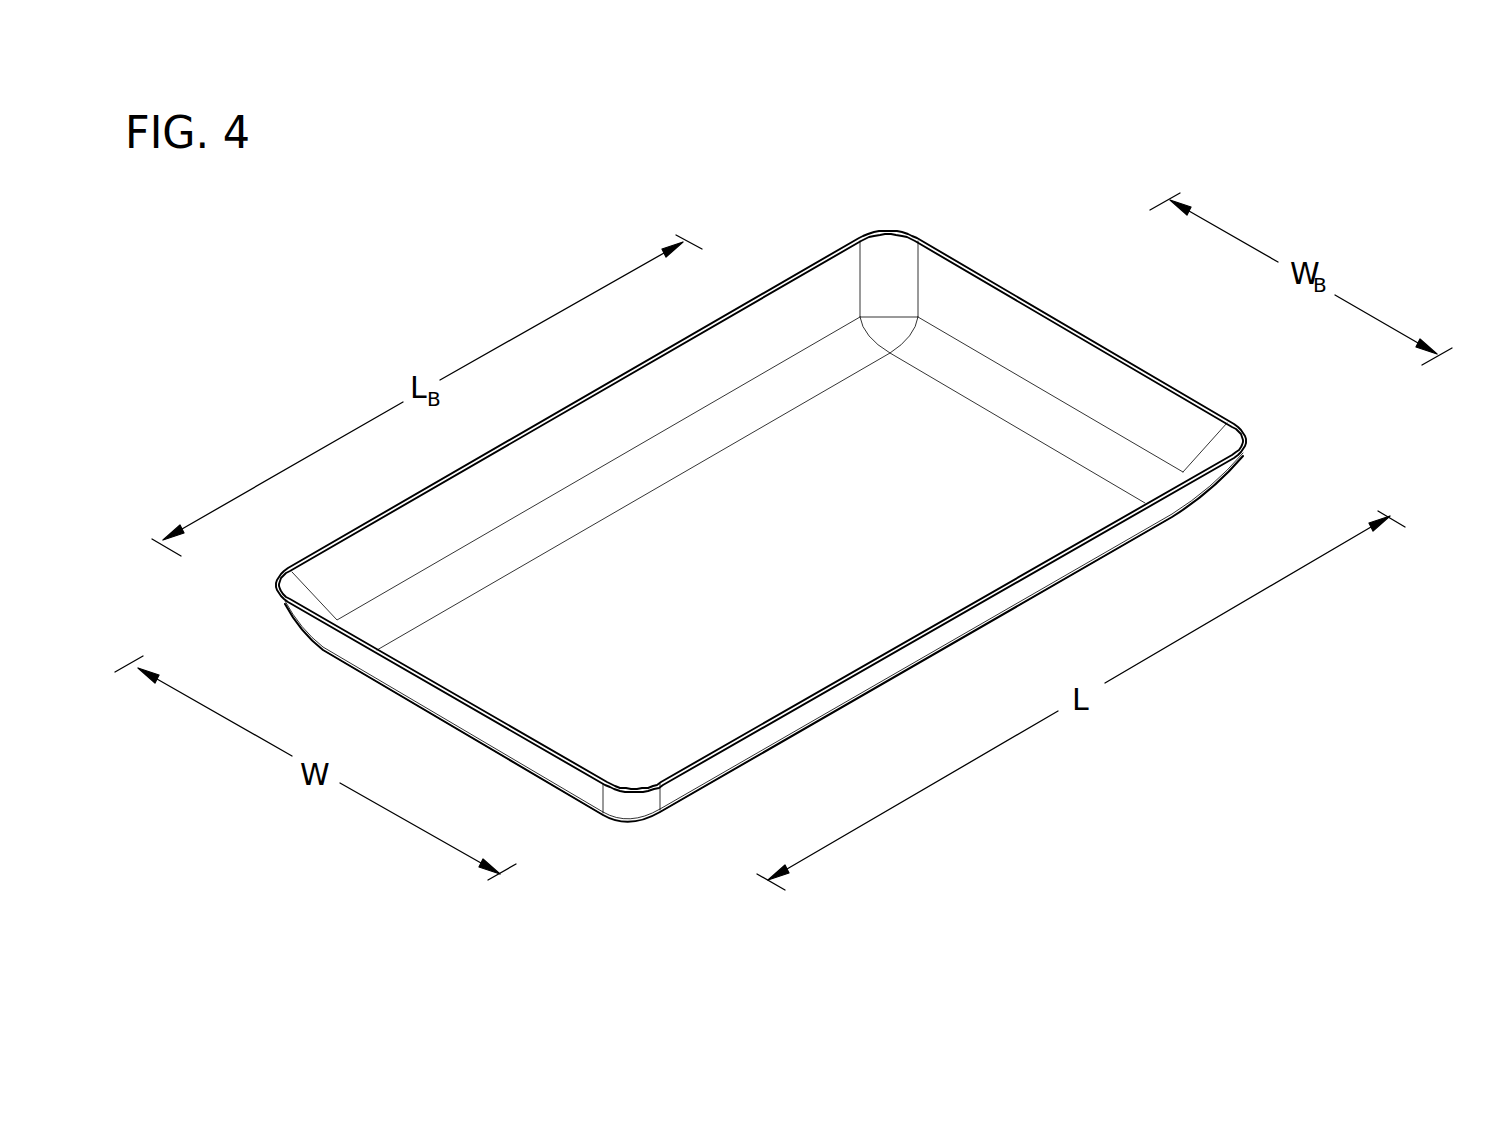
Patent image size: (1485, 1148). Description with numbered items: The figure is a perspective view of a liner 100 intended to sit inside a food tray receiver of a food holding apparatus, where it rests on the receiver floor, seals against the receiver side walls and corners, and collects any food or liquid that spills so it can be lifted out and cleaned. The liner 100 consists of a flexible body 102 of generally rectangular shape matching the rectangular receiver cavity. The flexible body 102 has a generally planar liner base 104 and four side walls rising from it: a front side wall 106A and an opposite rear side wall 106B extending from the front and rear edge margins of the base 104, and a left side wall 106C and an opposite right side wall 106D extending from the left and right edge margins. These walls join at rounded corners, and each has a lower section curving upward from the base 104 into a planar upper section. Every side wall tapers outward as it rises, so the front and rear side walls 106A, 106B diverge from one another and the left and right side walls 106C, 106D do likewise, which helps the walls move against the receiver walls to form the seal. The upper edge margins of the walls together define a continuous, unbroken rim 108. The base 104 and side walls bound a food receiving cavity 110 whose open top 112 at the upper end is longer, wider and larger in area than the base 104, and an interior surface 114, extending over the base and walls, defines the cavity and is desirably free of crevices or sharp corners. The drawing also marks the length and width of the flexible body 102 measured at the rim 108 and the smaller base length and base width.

The liner 100 is at (770, 238).
The flexible body 102 is at (953, 250).
The liner base 104 is at (925, 527).
The front side wall 106A is at (452, 712).
The rear side wall 106B is at (1072, 360).
The left side wall 106C is at (550, 460).
The right side wall 106D is at (918, 652).
The rim 108 is at (1010, 290).
The food receiving cavity 110 is at (738, 610).
The open top 112 is at (664, 373).
The interior surface 114 is at (1162, 412).